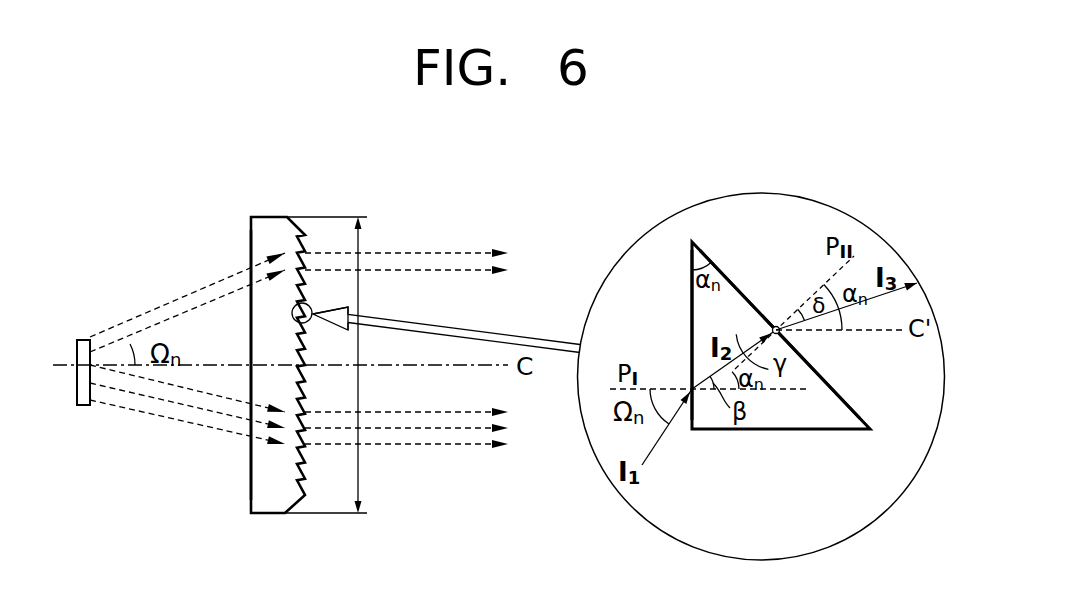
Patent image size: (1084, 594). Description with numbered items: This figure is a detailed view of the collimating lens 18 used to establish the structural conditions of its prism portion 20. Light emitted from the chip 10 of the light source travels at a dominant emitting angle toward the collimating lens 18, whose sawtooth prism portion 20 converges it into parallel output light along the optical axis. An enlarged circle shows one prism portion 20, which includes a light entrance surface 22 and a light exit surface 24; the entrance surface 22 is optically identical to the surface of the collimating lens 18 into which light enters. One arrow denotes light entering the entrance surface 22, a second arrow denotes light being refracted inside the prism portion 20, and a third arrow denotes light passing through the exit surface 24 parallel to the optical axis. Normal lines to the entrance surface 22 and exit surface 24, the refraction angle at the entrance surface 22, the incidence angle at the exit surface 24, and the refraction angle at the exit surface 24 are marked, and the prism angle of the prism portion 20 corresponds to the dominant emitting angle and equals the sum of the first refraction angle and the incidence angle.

The chip 10 is at (83, 340).
The collimating lens 18 is at (268, 217).
The prism portion 20 is at (845, 382).
The light entrance surface 22 is at (251, 242).
The light exit surface 24 is at (722, 272).